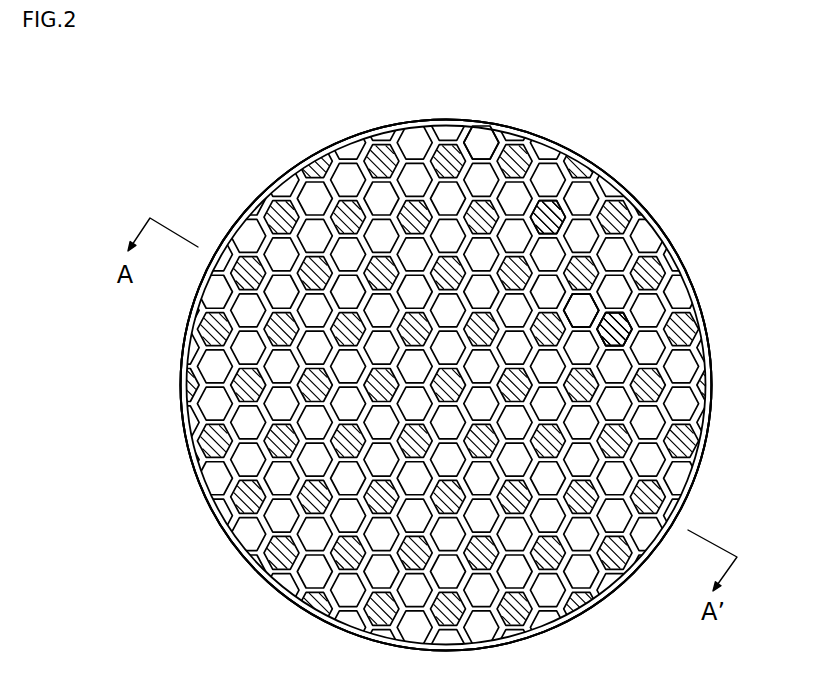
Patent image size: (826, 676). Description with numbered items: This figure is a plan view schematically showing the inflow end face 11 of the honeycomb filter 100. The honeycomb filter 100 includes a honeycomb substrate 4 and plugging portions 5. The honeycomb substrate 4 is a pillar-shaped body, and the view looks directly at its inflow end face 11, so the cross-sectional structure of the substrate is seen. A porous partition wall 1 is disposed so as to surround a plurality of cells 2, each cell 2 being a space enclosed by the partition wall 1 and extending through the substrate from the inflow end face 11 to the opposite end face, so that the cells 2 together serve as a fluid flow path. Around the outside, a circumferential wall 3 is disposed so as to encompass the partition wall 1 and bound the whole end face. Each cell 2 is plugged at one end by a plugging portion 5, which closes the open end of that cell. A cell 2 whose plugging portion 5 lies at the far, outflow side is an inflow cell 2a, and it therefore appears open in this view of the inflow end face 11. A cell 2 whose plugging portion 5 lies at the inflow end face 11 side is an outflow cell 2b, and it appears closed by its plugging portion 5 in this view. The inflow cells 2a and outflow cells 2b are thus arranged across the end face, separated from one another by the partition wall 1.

The honeycomb filter 100 is at (758, 84).
The partition wall 1 is at (512, 272).
The cell 2 is at (598, 320).
The inflow cell 2a is at (607, 328).
The outflow cell 2b is at (580, 308).
The circumferential wall 3 is at (683, 500).
The honeycomb substrate 4 is at (478, 158).
The plugging portion 5 is at (570, 220).
The inflow end face 11 is at (253, 198).